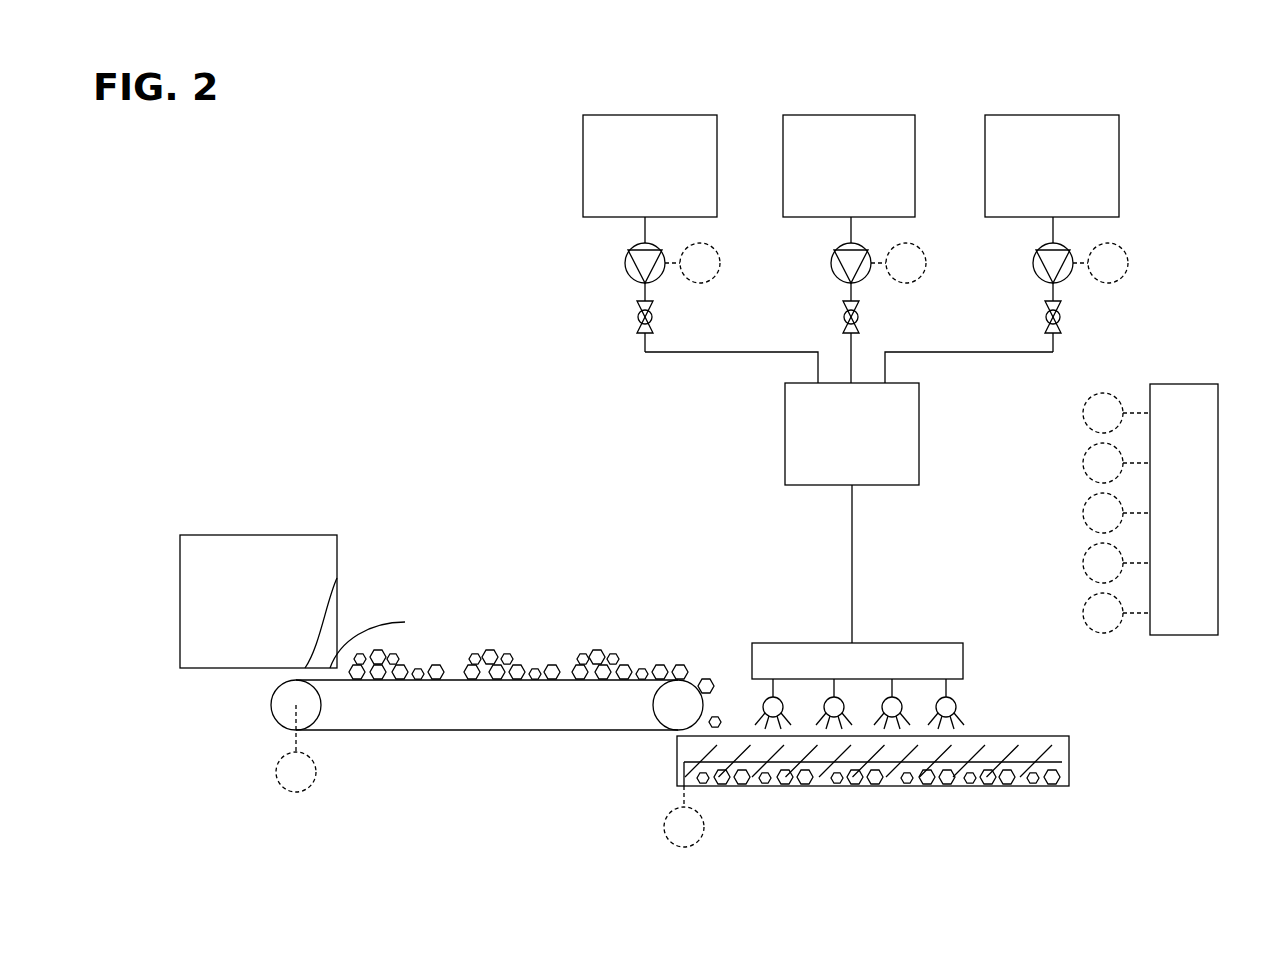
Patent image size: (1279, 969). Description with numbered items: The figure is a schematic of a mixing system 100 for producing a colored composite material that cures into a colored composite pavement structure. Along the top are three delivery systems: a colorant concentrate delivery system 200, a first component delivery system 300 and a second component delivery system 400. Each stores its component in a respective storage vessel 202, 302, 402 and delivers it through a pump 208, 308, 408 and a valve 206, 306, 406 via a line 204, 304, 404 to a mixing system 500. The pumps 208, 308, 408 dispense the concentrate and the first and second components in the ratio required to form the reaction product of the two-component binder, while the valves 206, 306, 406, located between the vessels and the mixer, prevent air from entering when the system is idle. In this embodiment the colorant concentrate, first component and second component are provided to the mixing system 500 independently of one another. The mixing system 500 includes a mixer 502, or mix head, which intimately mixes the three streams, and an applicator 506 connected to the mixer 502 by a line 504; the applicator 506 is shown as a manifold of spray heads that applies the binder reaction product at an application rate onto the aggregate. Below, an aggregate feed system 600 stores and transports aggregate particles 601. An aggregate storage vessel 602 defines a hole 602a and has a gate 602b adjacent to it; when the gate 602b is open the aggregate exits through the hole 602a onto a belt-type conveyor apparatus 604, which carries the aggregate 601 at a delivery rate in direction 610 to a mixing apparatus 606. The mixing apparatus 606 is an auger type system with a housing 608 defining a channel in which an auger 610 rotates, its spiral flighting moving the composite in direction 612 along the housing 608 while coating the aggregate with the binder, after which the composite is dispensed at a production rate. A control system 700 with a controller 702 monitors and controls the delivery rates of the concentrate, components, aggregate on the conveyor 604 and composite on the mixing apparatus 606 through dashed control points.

The mixing system 100 is at (491, 176).
The colorant concentrate delivery system 200 is at (596, 106).
The first storage vessel 202 is at (650, 166).
The line 204 is at (688, 358).
The valve 206 is at (637, 321).
The pump 208 is at (627, 268).
The first component delivery system 300 is at (803, 106).
The second storage vessel 302 is at (849, 166).
The line 304 is at (851, 362).
The valve 306 is at (843, 321).
The pump 308 is at (833, 268).
The second component delivery system 400 is at (1003, 106).
The third storage vessel 402 is at (1052, 166).
The line 404 is at (1032, 356).
The valve 406 is at (1045, 321).
The pump 408 is at (1035, 268).
The mixing system 500 is at (770, 465).
The mixer 502 is at (852, 434).
The line 504 is at (851, 573).
The applicator 506 is at (858, 686).
The aggregate feed system 600 is at (333, 515).
The aggregate particles 601 is at (638, 643).
The aggregate storage vessel 602 is at (258, 601).
The hole 602a is at (393, 639).
The gate 602b is at (337, 578).
The conveyor apparatus 604 is at (487, 705).
The mixing apparatus 606 is at (1060, 725).
The housing 608 is at (878, 783).
The auger 610 is at (745, 770).
The direction 612 is at (1185, 762).
The control system 700 is at (1187, 378).
The controller 702 is at (1184, 509).